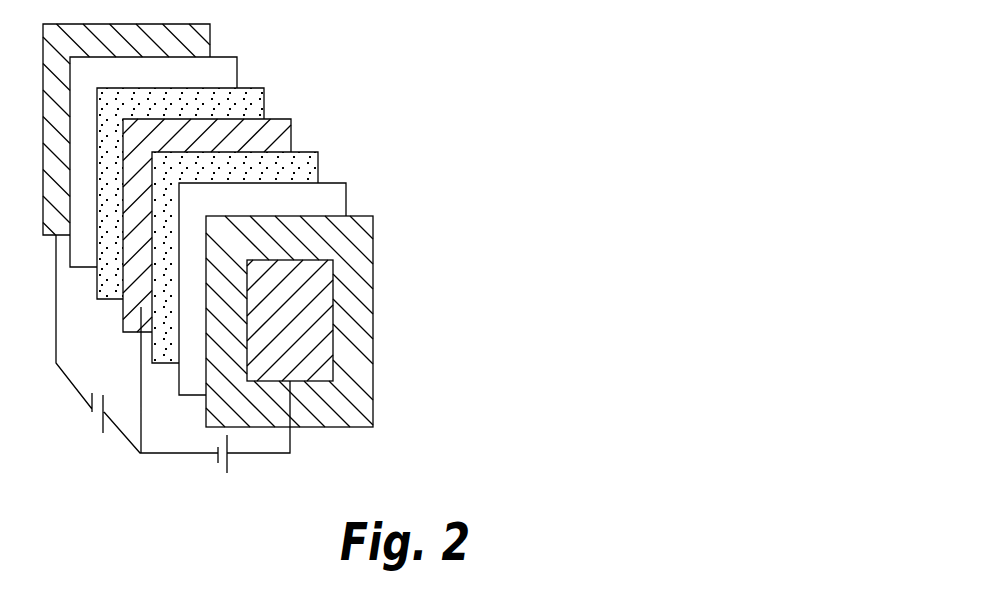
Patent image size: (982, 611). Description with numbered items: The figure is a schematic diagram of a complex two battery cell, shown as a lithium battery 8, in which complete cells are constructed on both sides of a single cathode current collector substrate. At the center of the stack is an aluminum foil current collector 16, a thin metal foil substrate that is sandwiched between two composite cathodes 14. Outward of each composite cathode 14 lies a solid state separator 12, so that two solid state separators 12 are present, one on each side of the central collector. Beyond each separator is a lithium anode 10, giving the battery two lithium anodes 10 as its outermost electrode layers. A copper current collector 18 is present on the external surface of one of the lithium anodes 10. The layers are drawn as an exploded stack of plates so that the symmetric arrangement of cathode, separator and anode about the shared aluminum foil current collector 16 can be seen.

The lithium battery 8 is at (663, 282).
The lithium anode 10 is at (243, 42).
The solid state separator 12 is at (272, 72).
The composite cathode 14 is at (298, 103).
The aluminum foil current collector 16 is at (325, 135).
The copper current collector 18 is at (356, 321).